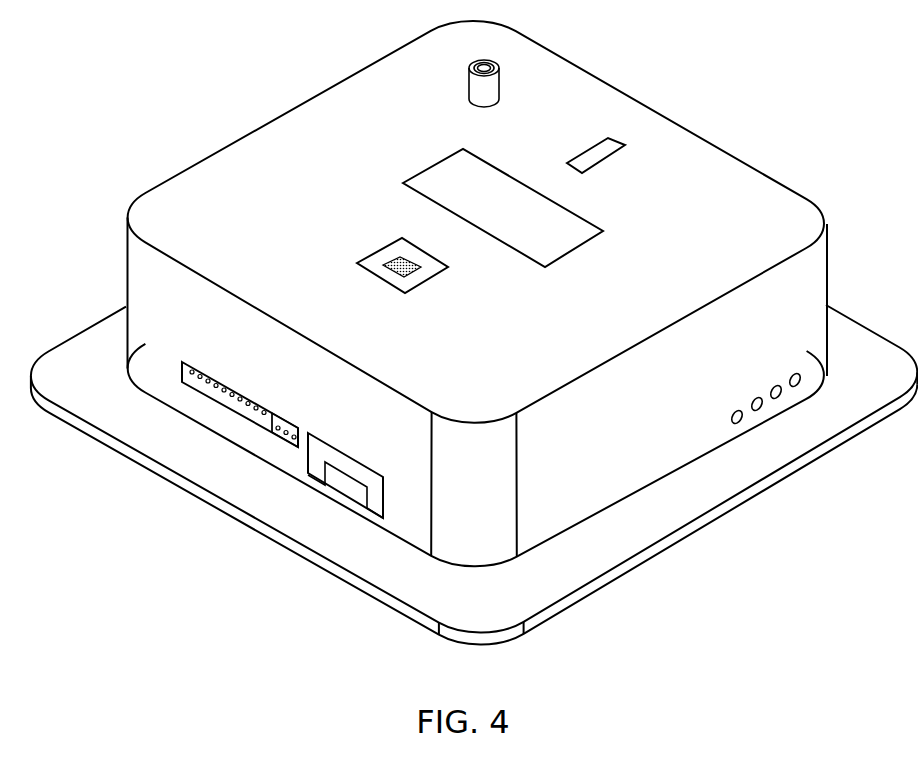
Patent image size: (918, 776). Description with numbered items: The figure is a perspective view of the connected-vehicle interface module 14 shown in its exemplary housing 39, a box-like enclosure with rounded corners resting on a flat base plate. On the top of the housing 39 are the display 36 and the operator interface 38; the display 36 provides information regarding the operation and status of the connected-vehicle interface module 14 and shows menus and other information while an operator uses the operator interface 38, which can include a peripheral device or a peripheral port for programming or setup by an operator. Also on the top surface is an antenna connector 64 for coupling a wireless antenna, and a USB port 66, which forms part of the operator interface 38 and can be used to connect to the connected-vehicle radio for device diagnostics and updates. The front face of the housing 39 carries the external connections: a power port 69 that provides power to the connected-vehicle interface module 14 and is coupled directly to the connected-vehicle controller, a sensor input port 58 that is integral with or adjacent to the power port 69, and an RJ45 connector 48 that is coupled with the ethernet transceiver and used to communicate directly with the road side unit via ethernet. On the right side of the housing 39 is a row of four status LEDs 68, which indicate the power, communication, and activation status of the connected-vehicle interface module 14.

The connected-vehicle interface module 14 is at (716, 85).
The housing 39 is at (192, 178).
The display 36 is at (489, 220).
The operator interface 38 is at (383, 272).
The antenna connector 64 is at (498, 77).
The USB port 66 is at (606, 160).
The status LEDs 68 is at (795, 373).
The power port 69 is at (220, 402).
The sensor input port 58 is at (275, 432).
The RJ45 connector 48 is at (310, 473).